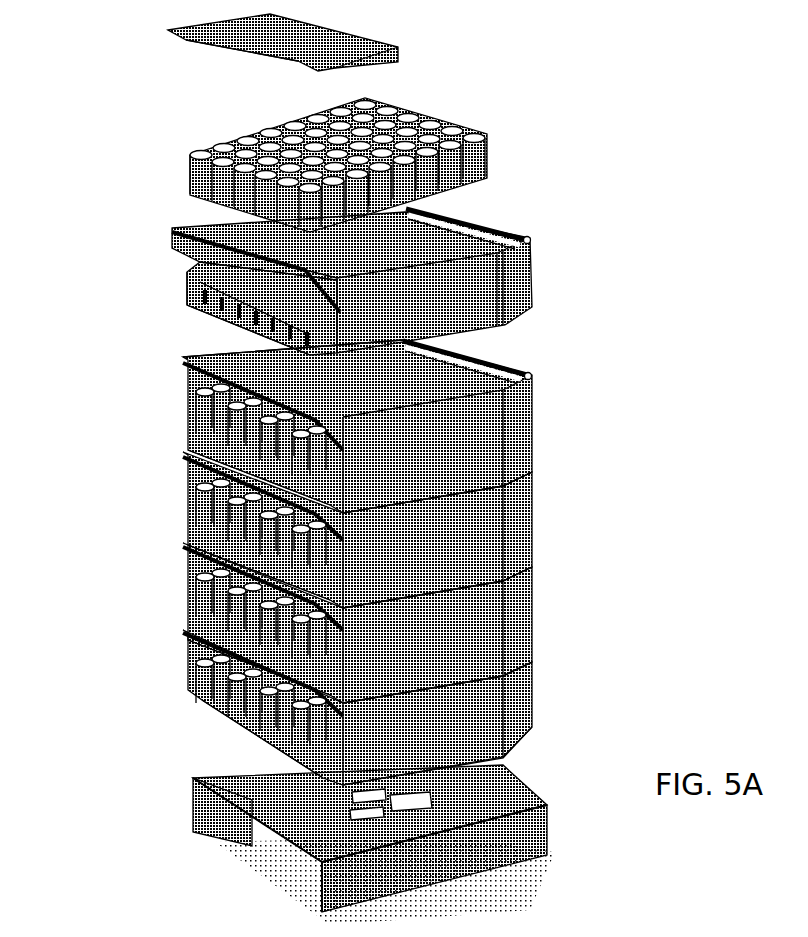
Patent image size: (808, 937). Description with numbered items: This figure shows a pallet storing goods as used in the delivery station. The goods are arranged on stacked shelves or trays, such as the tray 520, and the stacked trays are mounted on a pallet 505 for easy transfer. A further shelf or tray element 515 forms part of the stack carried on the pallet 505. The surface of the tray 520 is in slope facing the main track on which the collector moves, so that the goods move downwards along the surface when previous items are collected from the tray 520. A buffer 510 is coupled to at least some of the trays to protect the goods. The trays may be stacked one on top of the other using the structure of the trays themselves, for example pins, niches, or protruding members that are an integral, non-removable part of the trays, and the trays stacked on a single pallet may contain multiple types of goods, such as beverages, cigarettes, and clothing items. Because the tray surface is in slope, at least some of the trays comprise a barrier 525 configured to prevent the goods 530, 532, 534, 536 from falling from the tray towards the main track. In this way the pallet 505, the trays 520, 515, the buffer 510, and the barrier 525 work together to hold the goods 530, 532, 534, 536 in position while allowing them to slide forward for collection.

The base plate 505 is at (195, 785).
The top cover 510 is at (372, 44).
The battery cell block 515 is at (243, 130).
The upper module tray 520 is at (178, 238).
The cell row of upper module 525 is at (185, 297).
The first battery module 530 is at (200, 407).
The second battery module 532 is at (200, 490).
The third battery module 534 is at (200, 588).
The fourth battery module 536 is at (212, 675).